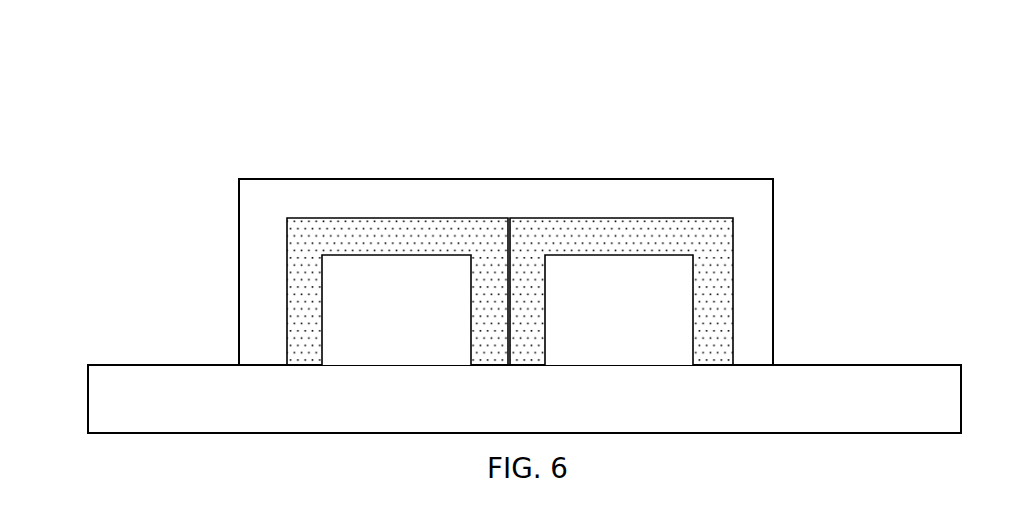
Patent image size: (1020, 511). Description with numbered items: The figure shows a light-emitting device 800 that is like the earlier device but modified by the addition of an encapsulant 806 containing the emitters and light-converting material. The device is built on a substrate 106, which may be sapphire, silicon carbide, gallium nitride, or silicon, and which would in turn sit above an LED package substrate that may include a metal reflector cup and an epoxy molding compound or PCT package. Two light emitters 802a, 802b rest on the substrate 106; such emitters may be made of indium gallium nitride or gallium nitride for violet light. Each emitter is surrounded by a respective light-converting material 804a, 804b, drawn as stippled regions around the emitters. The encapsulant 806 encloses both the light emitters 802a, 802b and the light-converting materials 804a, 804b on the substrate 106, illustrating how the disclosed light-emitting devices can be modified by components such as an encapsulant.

The light-emitting device 800 is at (131, 55).
The substrate 106 is at (157, 419).
The encapsulant 806 is at (363, 205).
The light-converting material 804a is at (483, 247).
The light-converting material 804b is at (700, 242).
The light emitter 802a is at (418, 327).
The light emitter 802b is at (646, 322).